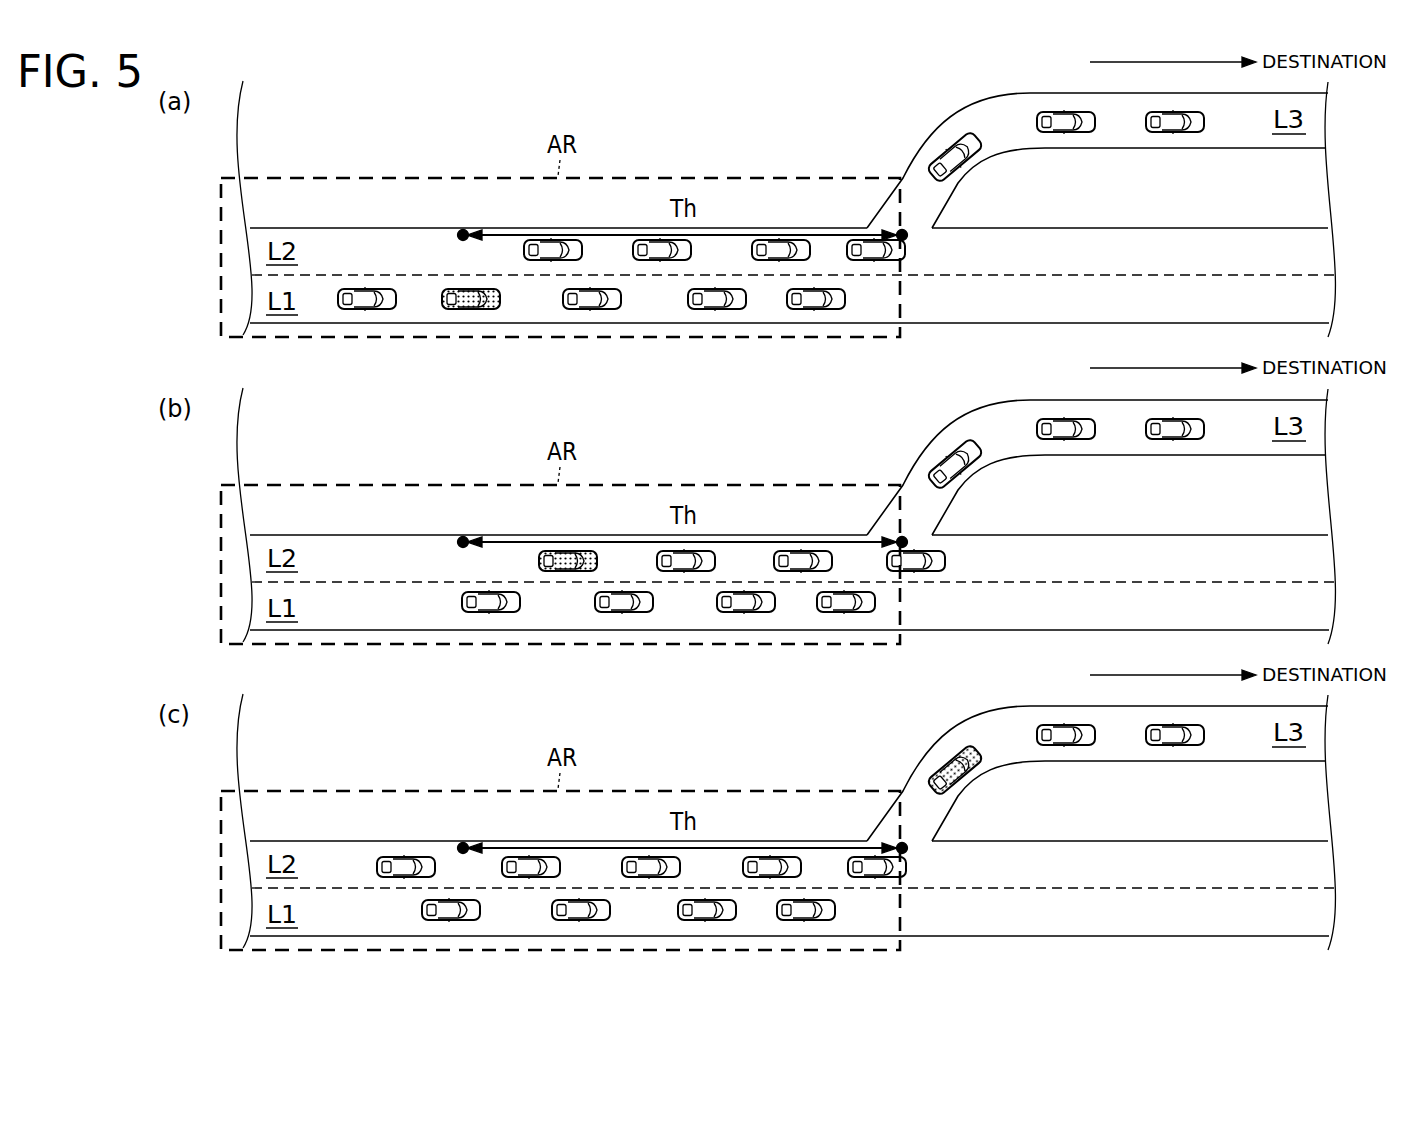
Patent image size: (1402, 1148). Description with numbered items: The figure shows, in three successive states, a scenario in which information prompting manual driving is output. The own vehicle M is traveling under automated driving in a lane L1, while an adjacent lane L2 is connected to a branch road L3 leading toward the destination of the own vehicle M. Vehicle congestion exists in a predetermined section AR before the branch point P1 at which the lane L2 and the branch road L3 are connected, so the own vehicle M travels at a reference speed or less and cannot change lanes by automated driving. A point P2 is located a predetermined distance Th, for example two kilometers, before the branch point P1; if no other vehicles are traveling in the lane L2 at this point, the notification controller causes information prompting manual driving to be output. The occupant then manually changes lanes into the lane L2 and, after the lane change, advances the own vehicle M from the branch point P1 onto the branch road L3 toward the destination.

The lane L1 is at (792, 605).
The lane L2 is at (789, 553).
The branch road L3 is at (1097, 467).
The predetermined section AR is at (560, 540).
The predetermined distance Th is at (682, 524).
The branch point P1 is at (907, 238).
The point before branch point P2 is at (458, 237).
The own vehicle M is at (476, 311).